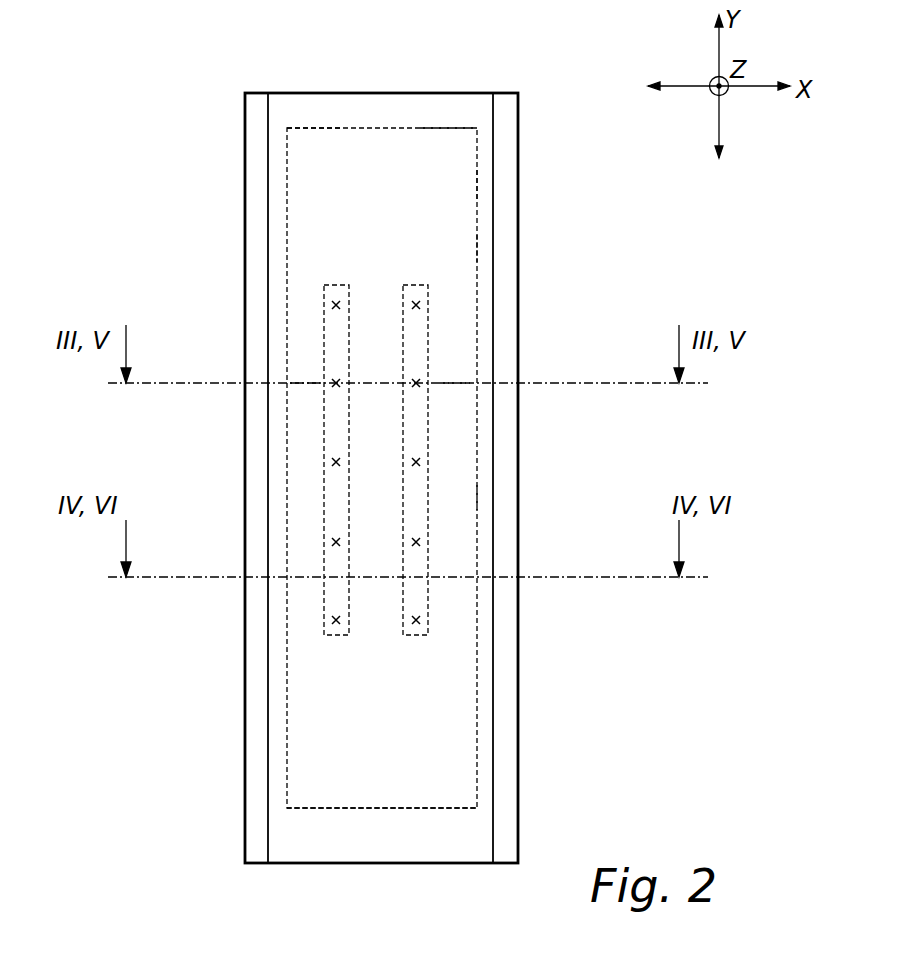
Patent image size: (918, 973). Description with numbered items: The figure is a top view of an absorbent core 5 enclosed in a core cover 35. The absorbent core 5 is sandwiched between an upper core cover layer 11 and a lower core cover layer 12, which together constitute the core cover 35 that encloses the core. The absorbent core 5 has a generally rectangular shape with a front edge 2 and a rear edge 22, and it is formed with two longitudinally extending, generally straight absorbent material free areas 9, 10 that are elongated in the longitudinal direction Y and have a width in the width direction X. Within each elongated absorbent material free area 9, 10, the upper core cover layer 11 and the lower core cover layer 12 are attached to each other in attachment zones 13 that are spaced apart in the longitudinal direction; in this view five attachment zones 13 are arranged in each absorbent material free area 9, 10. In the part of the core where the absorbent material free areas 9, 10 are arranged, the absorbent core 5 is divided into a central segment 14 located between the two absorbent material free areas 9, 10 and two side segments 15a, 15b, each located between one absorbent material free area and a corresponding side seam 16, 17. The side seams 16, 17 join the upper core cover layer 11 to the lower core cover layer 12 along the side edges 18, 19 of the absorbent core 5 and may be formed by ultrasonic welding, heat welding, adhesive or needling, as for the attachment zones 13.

The front edge 2 is at (378, 128).
The absorbent core 5 is at (450, 188).
The absorbent material free area 9 is at (335, 325).
The absorbent material free area 10 is at (410, 340).
The upper core cover layer 11 is at (428, 155).
The lower core cover layer 12 is at (313, 157).
The attachment zones 13 is at (335, 462).
The central segment 14 is at (372, 557).
The side segment 15a is at (300, 360).
The side segment 15b is at (458, 367).
The side seam 16 is at (245, 712).
The side seam 17 is at (500, 673).
The side edge 18 is at (287, 643).
The side edge 19 is at (478, 498).
The rear edge 22 is at (392, 808).
The core cover 35 is at (450, 248).